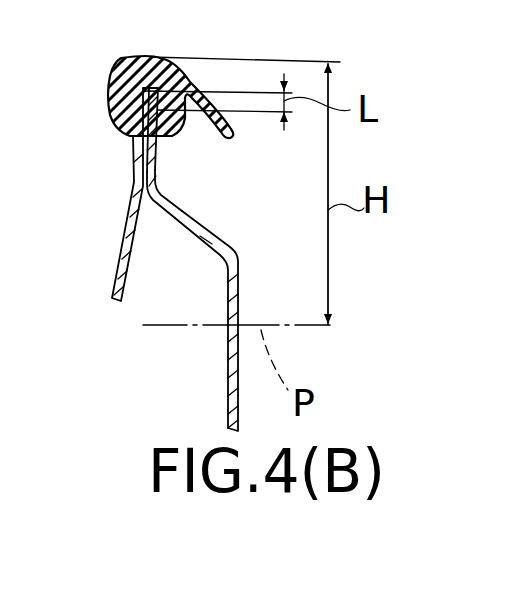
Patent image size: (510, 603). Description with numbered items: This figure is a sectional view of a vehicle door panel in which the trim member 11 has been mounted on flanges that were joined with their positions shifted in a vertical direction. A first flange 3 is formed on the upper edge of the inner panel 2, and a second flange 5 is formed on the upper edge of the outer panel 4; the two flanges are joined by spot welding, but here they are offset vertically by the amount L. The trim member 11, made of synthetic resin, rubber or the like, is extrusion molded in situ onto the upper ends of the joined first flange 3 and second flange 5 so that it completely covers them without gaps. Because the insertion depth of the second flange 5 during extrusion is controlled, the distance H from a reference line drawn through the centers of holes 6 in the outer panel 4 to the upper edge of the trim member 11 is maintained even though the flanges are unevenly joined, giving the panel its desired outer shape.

The trim member 11 is at (106, 91).
The first flange 3 is at (134, 136).
The second flange 5 is at (152, 164).
The inner panel 2 is at (121, 254).
The outer panel 4 is at (241, 276).
The holes 6 is at (232, 340).